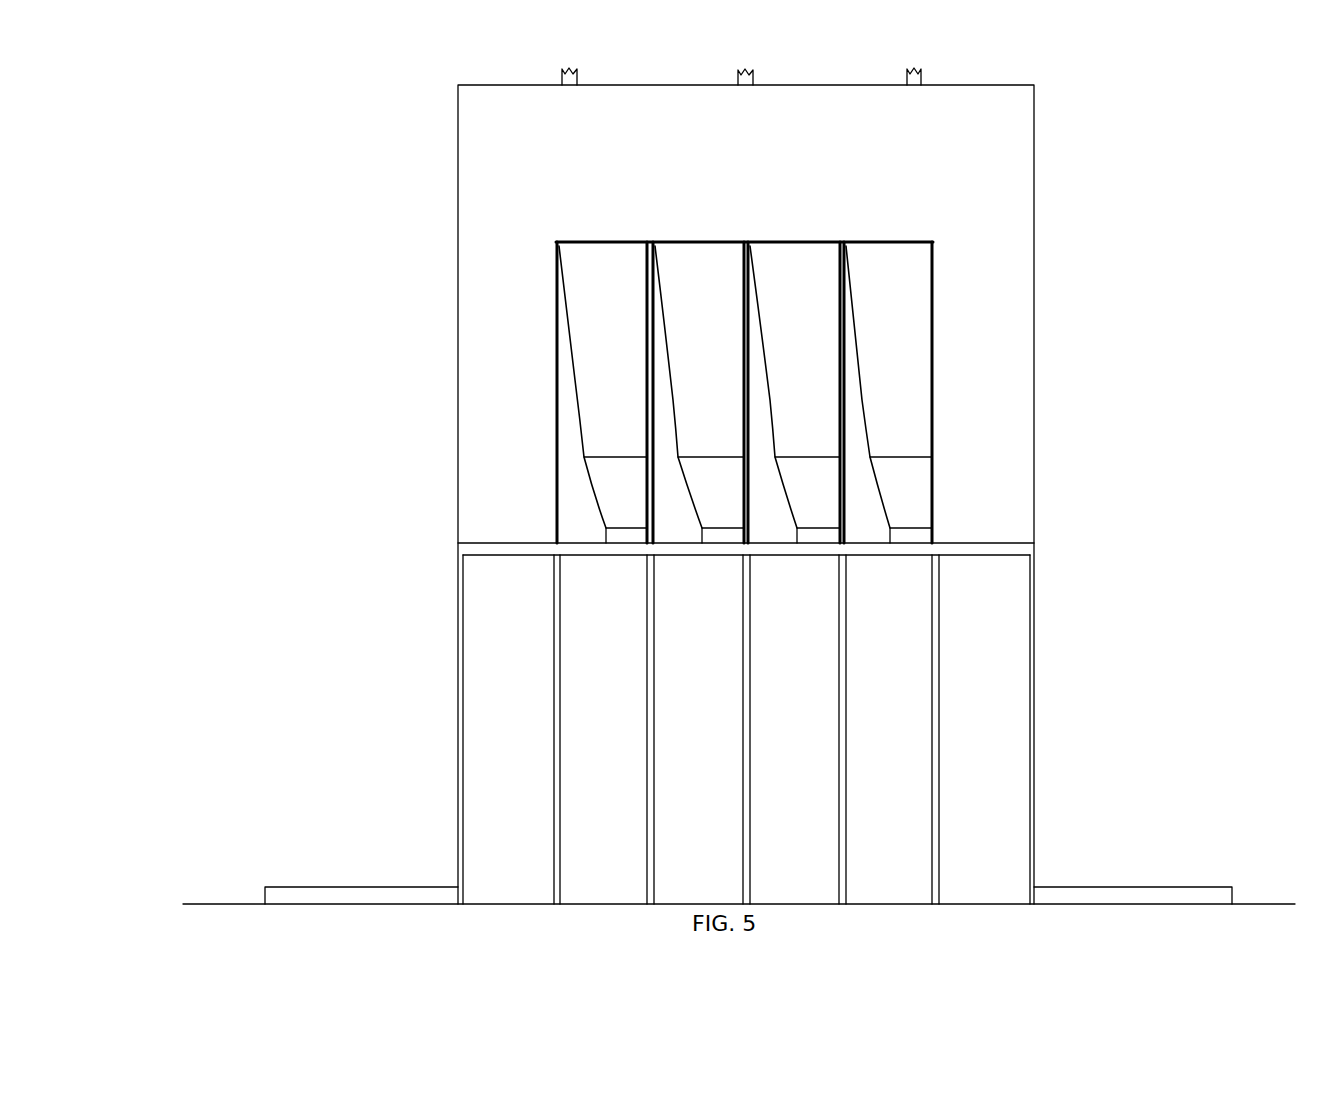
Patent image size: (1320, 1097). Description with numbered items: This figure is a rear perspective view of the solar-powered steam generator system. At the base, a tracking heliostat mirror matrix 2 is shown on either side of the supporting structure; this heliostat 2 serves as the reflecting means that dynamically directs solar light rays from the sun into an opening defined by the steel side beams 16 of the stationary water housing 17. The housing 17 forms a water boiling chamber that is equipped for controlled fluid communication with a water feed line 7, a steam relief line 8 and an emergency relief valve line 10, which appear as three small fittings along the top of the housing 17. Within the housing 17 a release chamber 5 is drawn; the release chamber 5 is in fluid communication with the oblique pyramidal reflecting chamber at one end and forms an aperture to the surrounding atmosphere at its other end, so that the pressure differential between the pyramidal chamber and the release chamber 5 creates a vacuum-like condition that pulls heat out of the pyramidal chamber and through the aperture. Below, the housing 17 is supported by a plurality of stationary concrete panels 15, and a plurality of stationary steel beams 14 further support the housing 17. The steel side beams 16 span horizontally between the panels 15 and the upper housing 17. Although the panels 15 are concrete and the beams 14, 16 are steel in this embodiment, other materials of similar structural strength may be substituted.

The tracking heliostat mirror matrix 2 is at (320, 898).
The release chamber 5 is at (600, 398).
The water feed line 7 is at (577, 76).
The steam relief line 8 is at (753, 80).
The emergency relief valve line 10 is at (921, 78).
The stationary steel beams 14 is at (940, 697).
The stationary concrete panels 15 is at (515, 680).
The steel side beams 16 is at (485, 552).
The stationary water housing 17 is at (1035, 315).